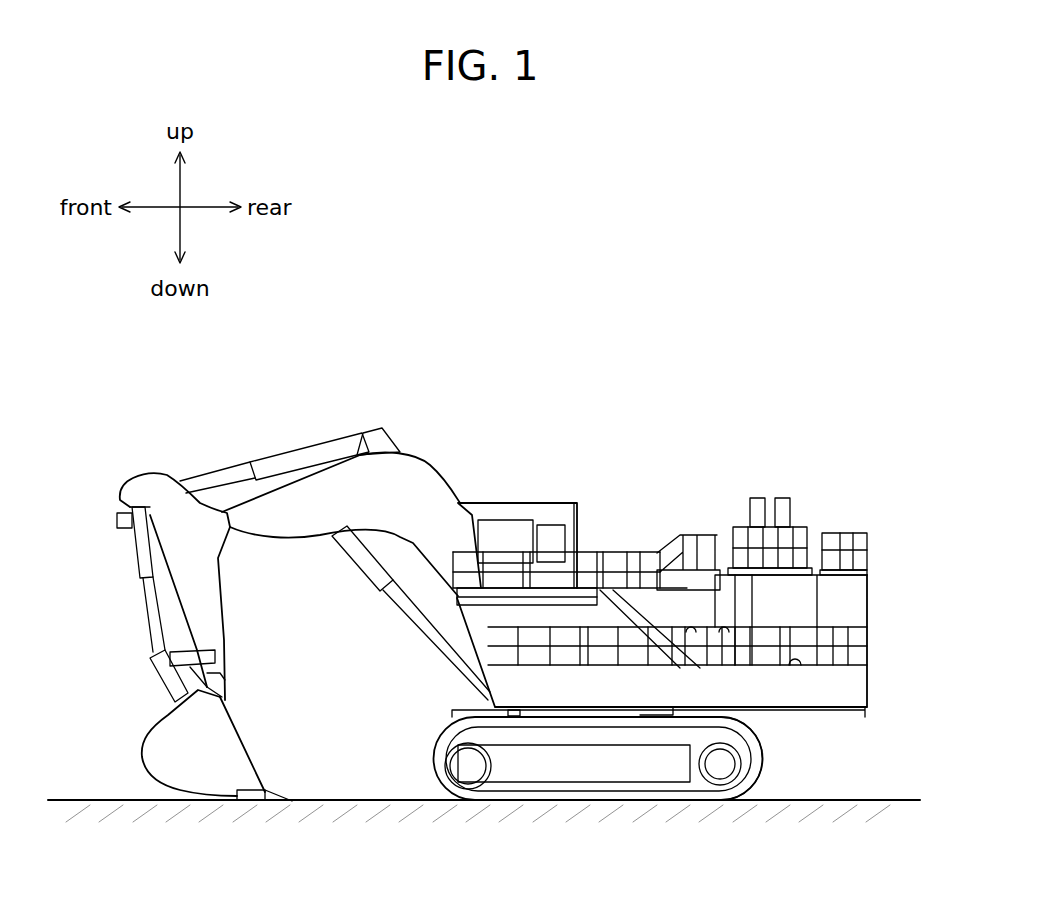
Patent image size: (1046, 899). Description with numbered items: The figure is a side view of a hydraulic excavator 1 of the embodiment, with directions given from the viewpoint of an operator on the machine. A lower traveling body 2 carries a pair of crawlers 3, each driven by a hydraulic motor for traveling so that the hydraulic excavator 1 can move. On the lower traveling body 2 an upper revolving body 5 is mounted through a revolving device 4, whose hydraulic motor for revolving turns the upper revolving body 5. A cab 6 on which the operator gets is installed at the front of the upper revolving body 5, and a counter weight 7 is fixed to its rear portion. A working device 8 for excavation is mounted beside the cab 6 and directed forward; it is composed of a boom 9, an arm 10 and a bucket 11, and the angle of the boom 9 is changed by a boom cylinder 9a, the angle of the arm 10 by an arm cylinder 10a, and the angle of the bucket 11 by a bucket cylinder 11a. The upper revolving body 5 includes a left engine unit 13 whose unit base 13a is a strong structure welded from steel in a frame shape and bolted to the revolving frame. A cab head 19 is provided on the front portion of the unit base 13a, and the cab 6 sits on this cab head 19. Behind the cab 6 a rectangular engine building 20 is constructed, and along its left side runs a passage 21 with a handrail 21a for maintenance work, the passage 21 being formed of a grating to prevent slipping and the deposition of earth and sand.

The hydraulic excavator 1 is at (684, 377).
The lower traveling body 2 is at (582, 770).
The crawlers 3 is at (757, 778).
The revolving device 4 is at (485, 708).
The upper revolving body 5 is at (801, 526).
The cab 6 is at (560, 510).
The counter weight 7 is at (843, 588).
The working device 8 is at (421, 455).
The boom 9 is at (432, 495).
The boom cylinder 9a is at (385, 600).
The arm 10 is at (155, 490).
The arm cylinder 10a is at (294, 447).
The bucket 11 is at (157, 740).
The bucket cylinder 11a is at (129, 551).
The left engine unit 13 is at (867, 677).
The unit base 13a is at (848, 692).
The cab head 19 is at (490, 618).
The engine building 20 is at (797, 612).
The passage 21 is at (795, 668).
The handrail 21a is at (723, 630).